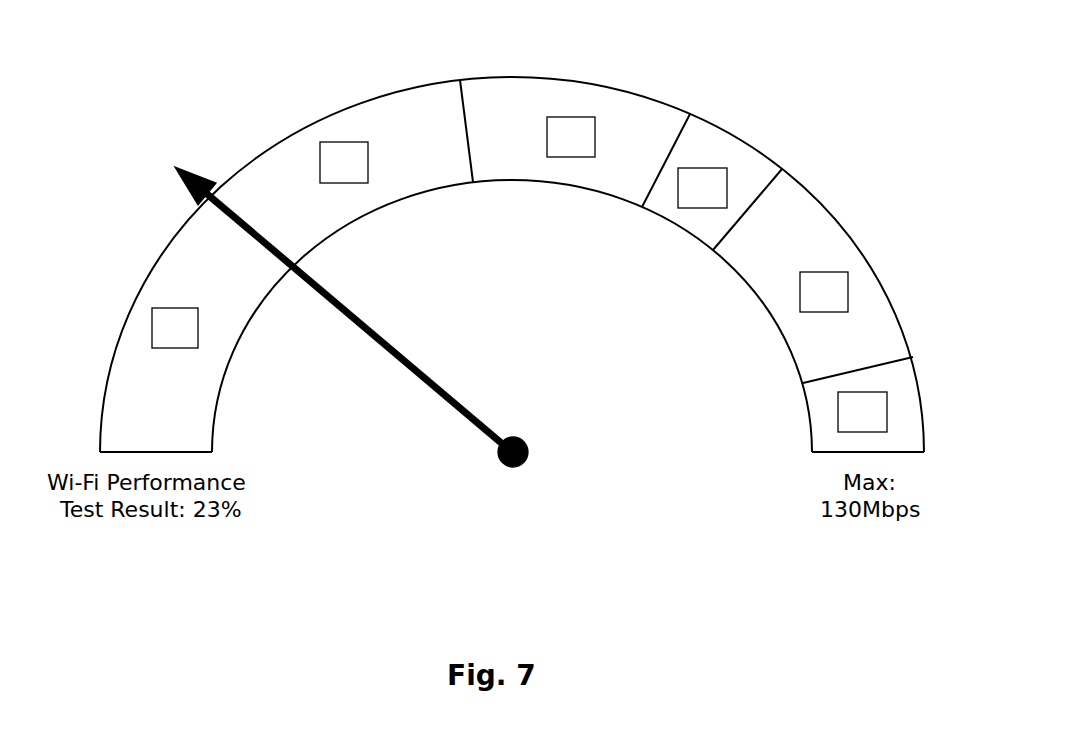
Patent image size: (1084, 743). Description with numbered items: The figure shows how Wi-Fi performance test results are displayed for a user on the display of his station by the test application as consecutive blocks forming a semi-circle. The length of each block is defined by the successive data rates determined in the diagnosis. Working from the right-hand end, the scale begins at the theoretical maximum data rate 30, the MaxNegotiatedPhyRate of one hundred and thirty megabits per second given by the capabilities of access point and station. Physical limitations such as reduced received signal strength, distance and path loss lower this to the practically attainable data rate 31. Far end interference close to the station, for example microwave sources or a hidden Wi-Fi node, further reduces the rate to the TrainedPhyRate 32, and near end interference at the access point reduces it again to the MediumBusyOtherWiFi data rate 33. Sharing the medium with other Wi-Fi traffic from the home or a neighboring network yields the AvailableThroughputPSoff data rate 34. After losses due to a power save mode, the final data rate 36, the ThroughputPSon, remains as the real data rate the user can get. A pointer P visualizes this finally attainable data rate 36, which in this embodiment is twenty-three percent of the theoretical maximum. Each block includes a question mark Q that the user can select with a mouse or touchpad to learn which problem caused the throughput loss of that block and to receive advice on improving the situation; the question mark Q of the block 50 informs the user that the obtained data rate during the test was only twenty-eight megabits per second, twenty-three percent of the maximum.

The theoretical maximum data rate 30 is at (924, 452).
The practically attainable data rate 31 is at (913, 357).
The TrainedPhyRate 32 is at (782, 169).
The MediumBusyOtherWiFi data rate 33 is at (690, 114).
The AvailableThroughputPSoff data rate 34 is at (460, 80).
The final data rate 36 is at (211, 192).
The block 50 is at (122, 377).
The pointer P is at (342, 312).
The question mark Q is at (571, 117).